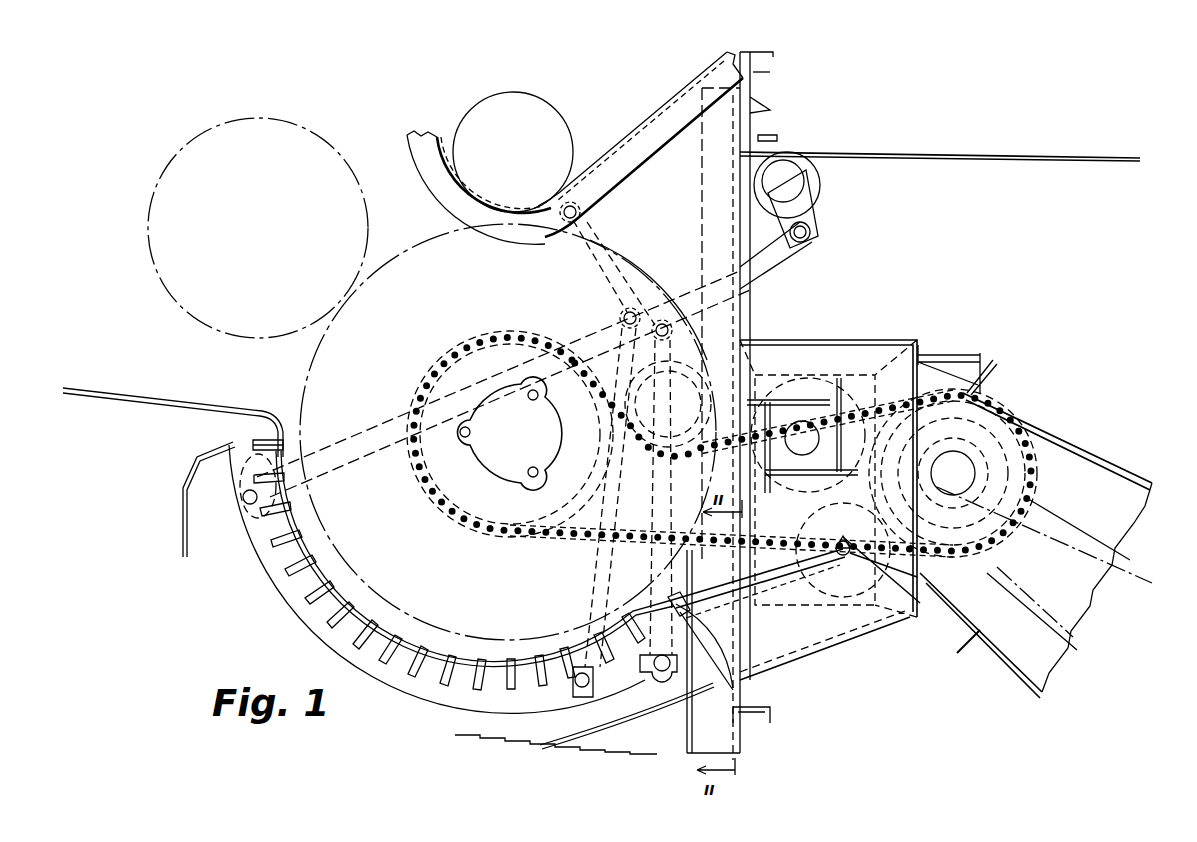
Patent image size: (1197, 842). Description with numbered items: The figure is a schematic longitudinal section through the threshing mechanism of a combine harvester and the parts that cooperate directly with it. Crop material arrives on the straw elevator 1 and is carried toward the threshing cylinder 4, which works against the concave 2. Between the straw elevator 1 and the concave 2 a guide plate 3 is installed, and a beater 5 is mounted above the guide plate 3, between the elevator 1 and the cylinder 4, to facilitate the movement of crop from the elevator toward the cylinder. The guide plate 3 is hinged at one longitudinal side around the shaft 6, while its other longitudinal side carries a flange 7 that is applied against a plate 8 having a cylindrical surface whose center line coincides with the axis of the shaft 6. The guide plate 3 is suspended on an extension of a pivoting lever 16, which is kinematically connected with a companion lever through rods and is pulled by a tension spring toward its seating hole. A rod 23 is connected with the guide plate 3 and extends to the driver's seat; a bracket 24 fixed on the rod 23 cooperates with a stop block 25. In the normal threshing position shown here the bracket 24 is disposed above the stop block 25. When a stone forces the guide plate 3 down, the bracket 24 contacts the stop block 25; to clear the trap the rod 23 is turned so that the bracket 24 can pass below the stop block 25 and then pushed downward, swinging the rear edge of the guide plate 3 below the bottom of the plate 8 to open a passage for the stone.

The straw elevator 1 is at (1091, 429).
The concave 2 is at (273, 611).
The guide plate 3 is at (782, 562).
The cylinder 4 is at (298, 374).
The beater 5 is at (803, 412).
The shaft 6 is at (846, 555).
The flange 7 is at (690, 604).
The plate 8 is at (692, 634).
The lever 16 is at (690, 732).
The rod 23 is at (770, 402).
The bracket 24 is at (770, 110).
The stop block 25 is at (777, 140).